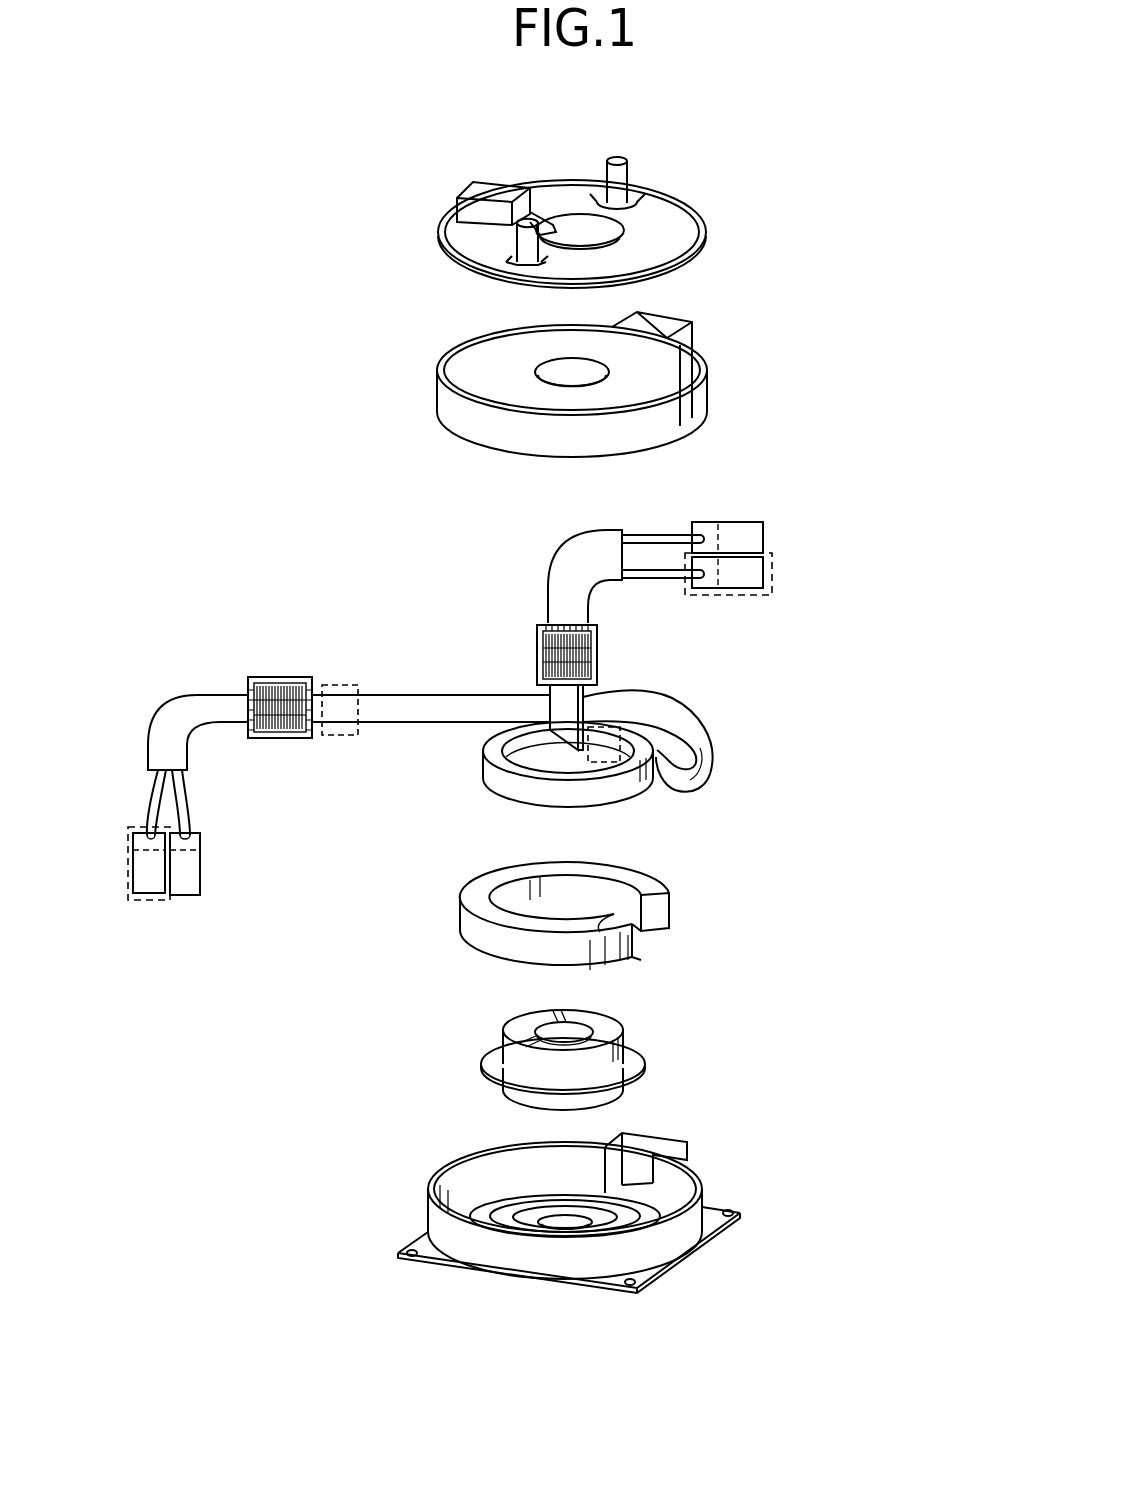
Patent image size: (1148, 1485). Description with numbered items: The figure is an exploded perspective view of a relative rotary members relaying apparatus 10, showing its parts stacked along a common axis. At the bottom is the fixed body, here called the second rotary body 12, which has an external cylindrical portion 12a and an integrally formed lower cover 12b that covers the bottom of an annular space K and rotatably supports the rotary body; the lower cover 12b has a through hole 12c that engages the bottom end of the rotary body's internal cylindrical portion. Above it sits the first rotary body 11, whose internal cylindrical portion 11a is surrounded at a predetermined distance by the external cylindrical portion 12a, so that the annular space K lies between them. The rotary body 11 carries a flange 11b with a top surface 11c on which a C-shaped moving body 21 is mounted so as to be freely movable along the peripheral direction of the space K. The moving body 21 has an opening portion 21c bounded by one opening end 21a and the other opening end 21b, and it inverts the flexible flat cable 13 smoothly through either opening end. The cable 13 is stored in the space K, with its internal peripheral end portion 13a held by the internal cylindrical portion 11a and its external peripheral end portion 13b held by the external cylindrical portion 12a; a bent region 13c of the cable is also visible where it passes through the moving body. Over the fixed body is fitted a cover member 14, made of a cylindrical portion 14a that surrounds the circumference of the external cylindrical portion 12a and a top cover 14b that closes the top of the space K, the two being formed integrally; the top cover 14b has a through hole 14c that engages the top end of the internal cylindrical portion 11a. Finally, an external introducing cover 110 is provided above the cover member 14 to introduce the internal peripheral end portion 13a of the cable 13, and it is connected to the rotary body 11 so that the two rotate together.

The relative rotary members relaying apparatus 10 is at (802, 157).
The external introducing cover 110 is at (712, 229).
The cover member 14 is at (627, 401).
The cylindrical portion 14a is at (688, 420).
The top cover 14b is at (685, 367).
The through hole 14c is at (593, 378).
The flexible flat cable 13 is at (482, 711).
The internal peripheral end portion 13a is at (604, 727).
The external peripheral end portion 13b is at (370, 695).
The bent portion 13c is at (694, 780).
The C-shaped moving body 21 is at (622, 910).
The opening end 21a is at (663, 910).
The other opening end 21b is at (638, 952).
The opening portion 21c is at (646, 940).
The first rotary body 11 is at (592, 1060).
The internal cylindrical portion 11a is at (632, 1047).
The flange 11b is at (634, 1075).
The top surface 11c is at (490, 1050).
The second rotary body 12 is at (522, 1230).
The external cylindrical portion 12a is at (428, 1189).
The lower cover 12b is at (489, 1200).
The through hole 12c is at (570, 1228).
The annular space K is at (490, 1157).